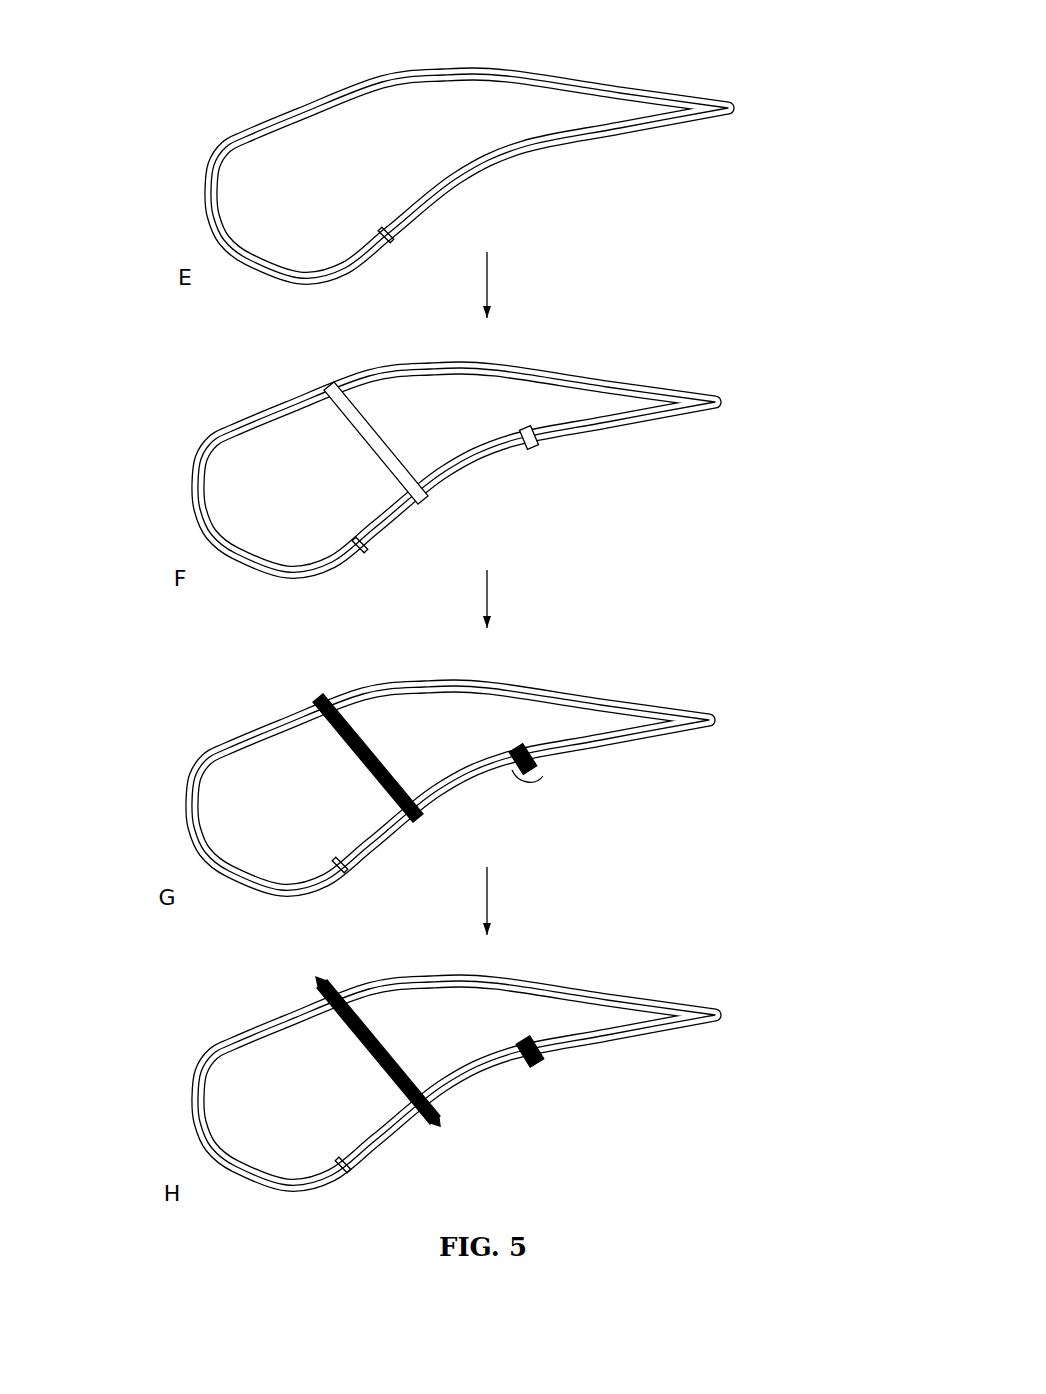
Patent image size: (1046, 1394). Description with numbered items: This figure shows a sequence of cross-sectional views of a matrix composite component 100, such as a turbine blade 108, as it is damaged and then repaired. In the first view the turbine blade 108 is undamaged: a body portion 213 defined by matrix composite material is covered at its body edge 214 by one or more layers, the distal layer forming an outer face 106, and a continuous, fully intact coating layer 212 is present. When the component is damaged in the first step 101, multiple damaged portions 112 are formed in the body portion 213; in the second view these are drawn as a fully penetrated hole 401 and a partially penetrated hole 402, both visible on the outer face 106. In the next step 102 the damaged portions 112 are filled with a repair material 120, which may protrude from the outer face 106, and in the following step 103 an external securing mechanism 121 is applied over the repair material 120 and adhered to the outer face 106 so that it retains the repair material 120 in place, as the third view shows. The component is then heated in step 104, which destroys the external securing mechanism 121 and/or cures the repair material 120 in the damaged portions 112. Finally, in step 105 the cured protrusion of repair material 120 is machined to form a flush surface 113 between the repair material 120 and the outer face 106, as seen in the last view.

The matrix composite component 100 is at (150, 129).
The step of damaging 101 is at (487, 280).
The step of filling with repair material 102 is at (487, 576).
The step of applying external securing mechanism 103 is at (487, 621).
The step of heating 104 is at (487, 878).
The step of machining 105 is at (487, 925).
The outer face 106 is at (542, 75).
The turbine blade 108 is at (746, 71).
The damaged portion 112 is at (534, 444).
The flush surface 113 is at (318, 983).
The repair material 120 is at (413, 790).
The external securing mechanism 121 is at (320, 699).
The coating layer 212 is at (379, 250).
The body portion 213 is at (329, 199).
The body edge 214 is at (512, 147).
The fully penetrated hole 401 is at (410, 506).
The partially penetrated hole 402 is at (528, 449).